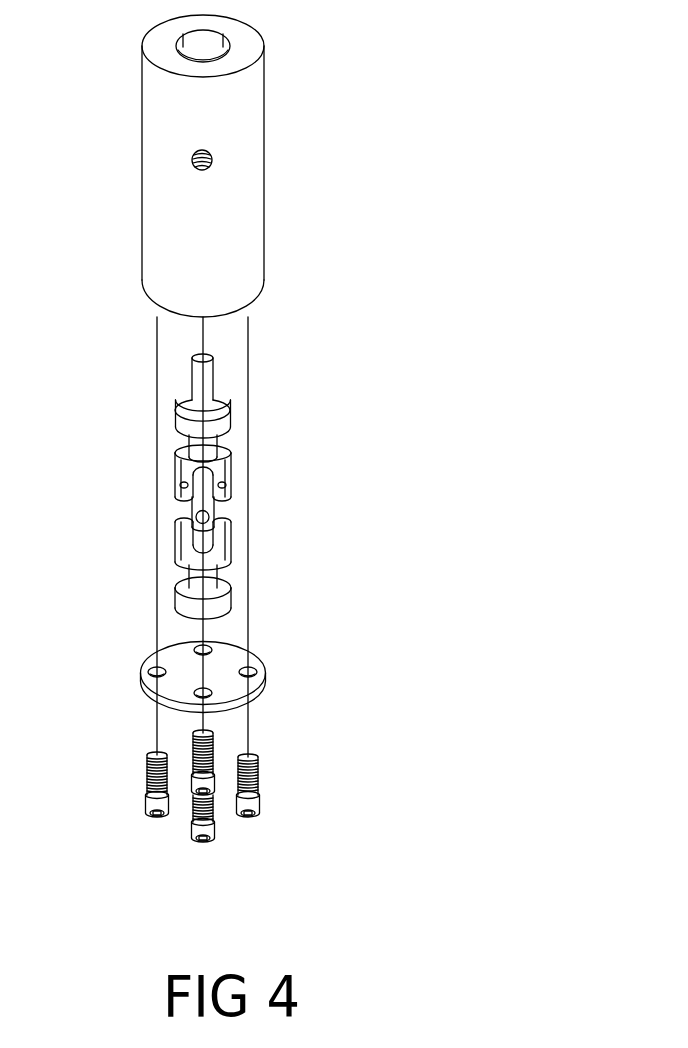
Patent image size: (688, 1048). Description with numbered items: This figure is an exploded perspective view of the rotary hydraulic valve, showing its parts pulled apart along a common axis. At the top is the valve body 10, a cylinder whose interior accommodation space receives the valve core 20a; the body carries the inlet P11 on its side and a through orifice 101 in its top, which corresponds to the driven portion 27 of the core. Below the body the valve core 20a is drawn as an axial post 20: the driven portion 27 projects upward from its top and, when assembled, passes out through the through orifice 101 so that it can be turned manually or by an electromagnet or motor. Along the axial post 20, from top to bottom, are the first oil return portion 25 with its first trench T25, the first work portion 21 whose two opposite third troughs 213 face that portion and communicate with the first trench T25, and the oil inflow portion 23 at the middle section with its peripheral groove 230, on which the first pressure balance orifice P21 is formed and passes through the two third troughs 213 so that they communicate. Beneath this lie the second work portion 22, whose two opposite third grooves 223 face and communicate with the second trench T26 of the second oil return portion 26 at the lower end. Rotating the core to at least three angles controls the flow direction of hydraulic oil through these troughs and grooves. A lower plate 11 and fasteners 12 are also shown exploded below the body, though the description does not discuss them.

The valve body 10 is at (195, 383).
The through orifice 101 is at (215, 48).
The inlet P11 is at (192, 157).
The bottom flange plate 11 is at (255, 663).
The fastening bolts 12 is at (250, 803).
The valve core 20a is at (196, 492).
The axial post 20 is at (207, 425).
The driven portion 27 is at (197, 381).
The first oil return portion 25 is at (215, 443).
The first trench T25 is at (284, 448).
The first work portion 21 is at (207, 470).
The third troughs 213 is at (222, 462).
The first pressure balance orifice P21 is at (192, 513).
The oil inflow portion 23 is at (286, 530).
The peripheral groove 230 is at (230, 513).
The second work portion 22 is at (140, 585).
The third grooves 223 is at (183, 557).
The second oil return portion 26 is at (208, 578).
The second trench T26 is at (291, 584).